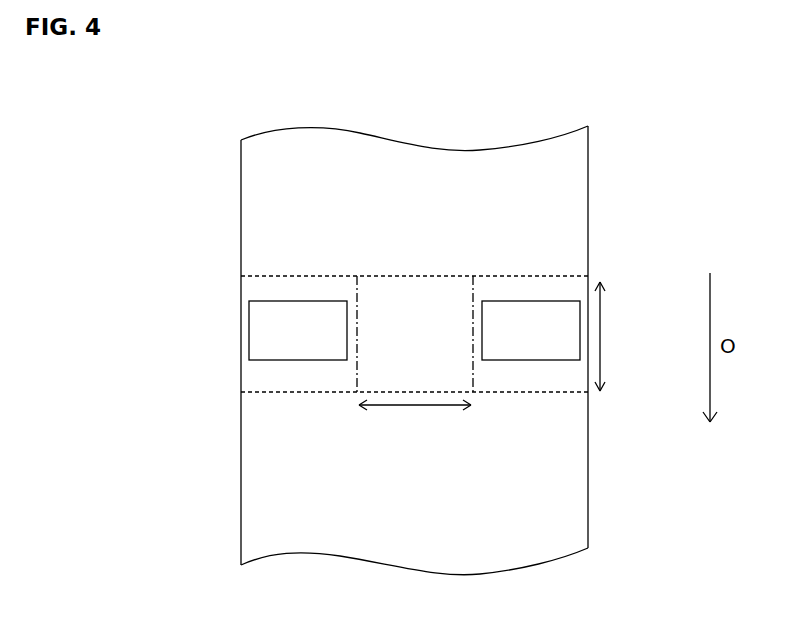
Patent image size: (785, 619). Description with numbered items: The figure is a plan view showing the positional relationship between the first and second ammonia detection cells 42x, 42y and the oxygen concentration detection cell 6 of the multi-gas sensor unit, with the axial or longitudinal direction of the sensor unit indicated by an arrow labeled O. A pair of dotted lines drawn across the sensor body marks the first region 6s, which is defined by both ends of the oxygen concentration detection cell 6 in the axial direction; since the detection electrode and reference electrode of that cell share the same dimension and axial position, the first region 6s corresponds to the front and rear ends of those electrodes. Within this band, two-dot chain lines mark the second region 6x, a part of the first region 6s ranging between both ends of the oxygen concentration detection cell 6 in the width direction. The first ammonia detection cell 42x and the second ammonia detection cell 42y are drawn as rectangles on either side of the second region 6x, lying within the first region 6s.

The oxygen concentration detection cell 6 is at (413, 295).
The second ammonia detection cell 42y is at (277, 333).
The first ammonia detection cell 42x is at (529, 343).
The second region 6x is at (415, 416).
The first region 6s is at (613, 336).